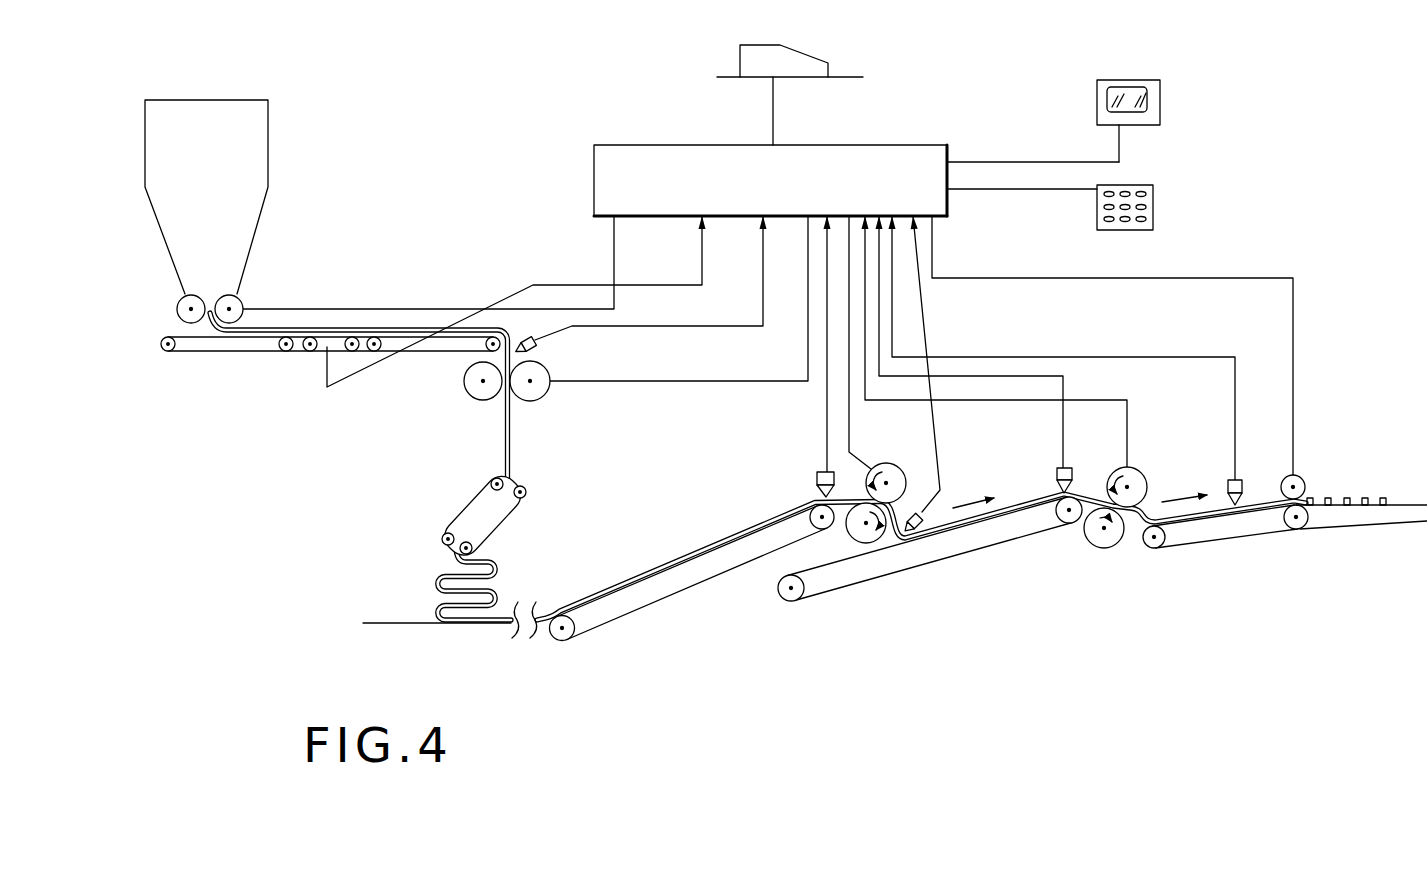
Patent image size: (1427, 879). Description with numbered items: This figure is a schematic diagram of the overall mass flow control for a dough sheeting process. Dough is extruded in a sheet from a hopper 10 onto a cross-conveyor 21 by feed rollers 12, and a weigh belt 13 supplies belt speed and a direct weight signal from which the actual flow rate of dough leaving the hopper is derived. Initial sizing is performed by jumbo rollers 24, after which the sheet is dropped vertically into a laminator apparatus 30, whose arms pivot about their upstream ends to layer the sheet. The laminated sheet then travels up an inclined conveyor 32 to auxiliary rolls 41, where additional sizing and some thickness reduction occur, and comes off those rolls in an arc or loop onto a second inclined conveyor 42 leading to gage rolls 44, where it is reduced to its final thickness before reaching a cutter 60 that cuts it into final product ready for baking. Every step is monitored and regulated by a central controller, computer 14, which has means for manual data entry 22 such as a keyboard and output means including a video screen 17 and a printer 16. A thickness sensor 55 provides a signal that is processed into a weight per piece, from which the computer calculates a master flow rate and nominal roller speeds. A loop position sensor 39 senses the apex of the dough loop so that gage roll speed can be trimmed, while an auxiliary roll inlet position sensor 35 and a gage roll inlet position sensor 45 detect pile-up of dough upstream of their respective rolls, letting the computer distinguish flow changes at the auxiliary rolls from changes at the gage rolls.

The hopper 10 is at (268, 133).
The feed rollers 12 is at (177, 305).
The weigh belt 13 is at (323, 348).
The computer 14 is at (882, 163).
The printer 16 is at (740, 60).
The video screen 17 is at (1162, 100).
The cross-conveyor 21 is at (240, 353).
The means for manual data entry 22 is at (1157, 207).
The jumbo rollers 24 is at (470, 394).
The laminator apparatus 30 is at (473, 495).
The inclined conveyor 32 is at (601, 624).
The auxiliary roll inlet position sensor 35 is at (820, 498).
The loop position sensor 39 is at (928, 512).
The auxiliary rolls 41 is at (895, 466).
The conveyor 42 is at (857, 582).
The gage rolls 44 is at (1086, 538).
The gage roll inlet position sensor 45 is at (1057, 492).
The thickness sensor 55 is at (1242, 487).
The cutter 60 is at (1302, 478).